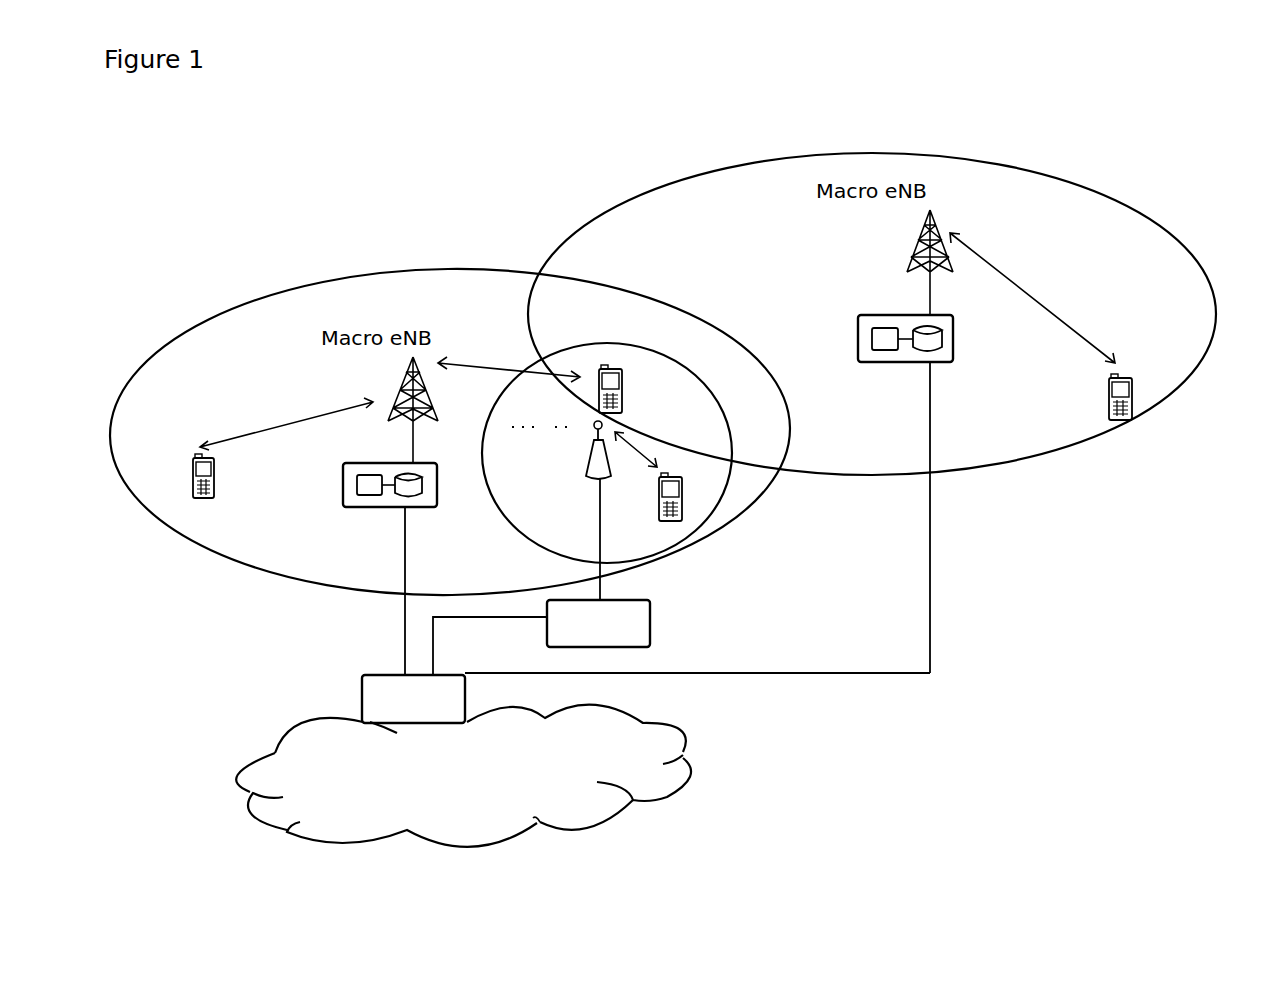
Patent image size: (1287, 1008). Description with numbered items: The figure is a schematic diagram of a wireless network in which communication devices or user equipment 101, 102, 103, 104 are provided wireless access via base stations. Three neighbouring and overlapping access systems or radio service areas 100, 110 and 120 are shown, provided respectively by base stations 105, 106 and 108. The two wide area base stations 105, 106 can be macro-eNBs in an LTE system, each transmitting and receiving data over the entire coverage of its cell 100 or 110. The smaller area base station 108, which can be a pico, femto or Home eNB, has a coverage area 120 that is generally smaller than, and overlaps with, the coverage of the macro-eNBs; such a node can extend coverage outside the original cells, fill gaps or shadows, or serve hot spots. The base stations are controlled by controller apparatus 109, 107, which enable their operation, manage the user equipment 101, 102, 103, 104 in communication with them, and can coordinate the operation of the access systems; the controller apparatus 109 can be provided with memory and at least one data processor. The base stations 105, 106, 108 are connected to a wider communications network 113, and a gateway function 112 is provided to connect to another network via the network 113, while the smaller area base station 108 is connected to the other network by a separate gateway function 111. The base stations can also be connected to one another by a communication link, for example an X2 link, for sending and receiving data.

The radio service area 100 is at (170, 299).
The radio service area 110 is at (585, 216).
The radio service area 120 is at (745, 411).
The user equipment 101 is at (193, 498).
The user equipment 102 is at (1109, 419).
The user equipment 103 is at (682, 519).
The user equipment 104 is at (600, 369).
The wide area base station 105 is at (397, 395).
The wide area base station 106 is at (915, 250).
The controller apparatus 107 is at (858, 318).
The smaller area base station 108 is at (583, 470).
The controller apparatus 109 is at (343, 463).
The separate gateway function 111 is at (650, 617).
The gateway function 112 is at (359, 692).
The wider communications network 113 is at (303, 748).